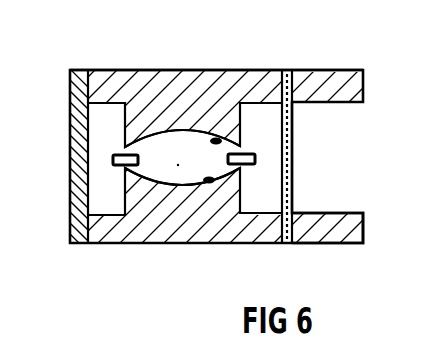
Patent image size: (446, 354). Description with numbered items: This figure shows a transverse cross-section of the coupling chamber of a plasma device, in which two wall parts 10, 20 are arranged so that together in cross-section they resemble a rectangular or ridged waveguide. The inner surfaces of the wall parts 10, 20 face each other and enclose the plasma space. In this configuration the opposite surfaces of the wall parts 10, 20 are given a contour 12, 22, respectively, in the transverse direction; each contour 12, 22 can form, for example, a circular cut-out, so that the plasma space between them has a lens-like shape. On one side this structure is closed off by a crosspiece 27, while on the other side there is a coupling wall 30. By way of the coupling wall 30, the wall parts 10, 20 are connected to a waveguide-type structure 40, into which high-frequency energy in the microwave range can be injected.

The wall part 10 is at (173, 233).
The contour 12 is at (213, 181).
The wall part 20 is at (210, 80).
The contour 22 is at (220, 140).
The crosspiece 27 is at (70, 152).
The coupling wall 30 is at (292, 175).
The waveguide-type structure 40 is at (336, 243).